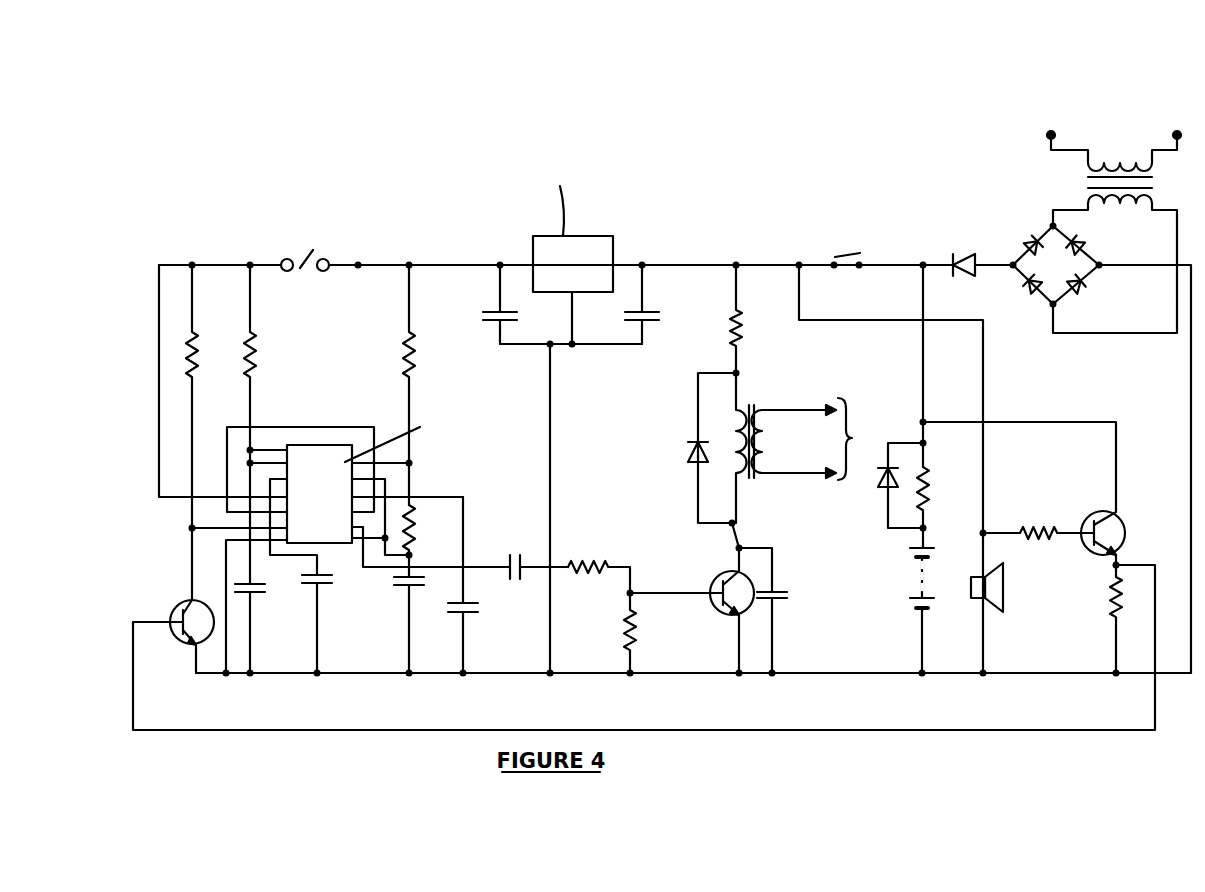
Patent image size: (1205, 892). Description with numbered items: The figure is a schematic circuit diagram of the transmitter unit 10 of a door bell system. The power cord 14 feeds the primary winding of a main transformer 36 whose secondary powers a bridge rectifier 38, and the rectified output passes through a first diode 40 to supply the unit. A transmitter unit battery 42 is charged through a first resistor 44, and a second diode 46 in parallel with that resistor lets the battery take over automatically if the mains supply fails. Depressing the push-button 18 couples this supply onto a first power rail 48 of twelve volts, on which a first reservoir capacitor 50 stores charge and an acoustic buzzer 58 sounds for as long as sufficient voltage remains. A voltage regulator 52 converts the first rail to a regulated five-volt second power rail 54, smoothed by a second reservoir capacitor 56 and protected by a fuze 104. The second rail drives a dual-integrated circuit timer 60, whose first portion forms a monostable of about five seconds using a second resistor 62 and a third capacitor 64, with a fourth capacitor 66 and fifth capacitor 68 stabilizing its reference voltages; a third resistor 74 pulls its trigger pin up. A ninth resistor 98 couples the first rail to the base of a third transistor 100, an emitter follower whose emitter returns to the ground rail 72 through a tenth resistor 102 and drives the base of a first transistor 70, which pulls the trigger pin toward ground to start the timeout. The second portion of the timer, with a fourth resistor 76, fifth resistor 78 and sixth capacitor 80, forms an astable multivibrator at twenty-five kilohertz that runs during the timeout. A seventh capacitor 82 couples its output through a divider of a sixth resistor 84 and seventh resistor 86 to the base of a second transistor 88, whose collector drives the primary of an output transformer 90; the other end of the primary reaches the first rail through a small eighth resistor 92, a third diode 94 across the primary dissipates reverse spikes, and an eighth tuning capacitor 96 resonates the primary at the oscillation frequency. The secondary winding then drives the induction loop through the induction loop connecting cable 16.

The transmitter unit 10 is at (408, 181).
The power cord 14 is at (1074, 224).
The induction loop connecting cable 16 is at (820, 439).
The push-button 18 is at (848, 250).
The main transformer 36 is at (1087, 183).
The bridge rectifier 38 is at (1064, 292).
The first diode 40 is at (953, 252).
The transmitter unit battery 42 is at (918, 582).
The first resistor 44 is at (928, 482).
The second diode 46 is at (883, 490).
The first power rail 48 is at (720, 258).
The first reservoir capacitor 50 is at (660, 312).
The voltage regulator 52 is at (590, 236).
The second power rail 54 is at (455, 262).
The second reservoir capacitor 56 is at (493, 323).
The acoustic buzzer 58 is at (1000, 590).
The dual-integrated circuit timer 60 is at (312, 445).
The second resistor 62 is at (253, 365).
The third capacitor 64 is at (258, 597).
The fourth capacitor 66 is at (320, 590).
The fifth capacitor 68 is at (472, 614).
The first transistor 70 is at (172, 613).
The ground rail 72 is at (530, 673).
The third resistor 74 is at (197, 342).
The fourth resistor 76 is at (418, 368).
The fifth resistor 78 is at (412, 522).
The sixth capacitor 80 is at (396, 592).
The seventh capacitor 82 is at (517, 550).
The sixth resistor 84 is at (583, 560).
The seventh resistor 86 is at (634, 640).
The second transistor 88 is at (712, 578).
The output transformer 90 is at (752, 405).
The eighth resistor 92 is at (740, 346).
The third diode 94 is at (690, 460).
The eighth tuning capacitor 96 is at (787, 587).
The ninth resistor 98 is at (1037, 522).
The third transistor 100 is at (1116, 524).
The tenth resistor 102 is at (1108, 605).
The fuze 104 is at (313, 250).